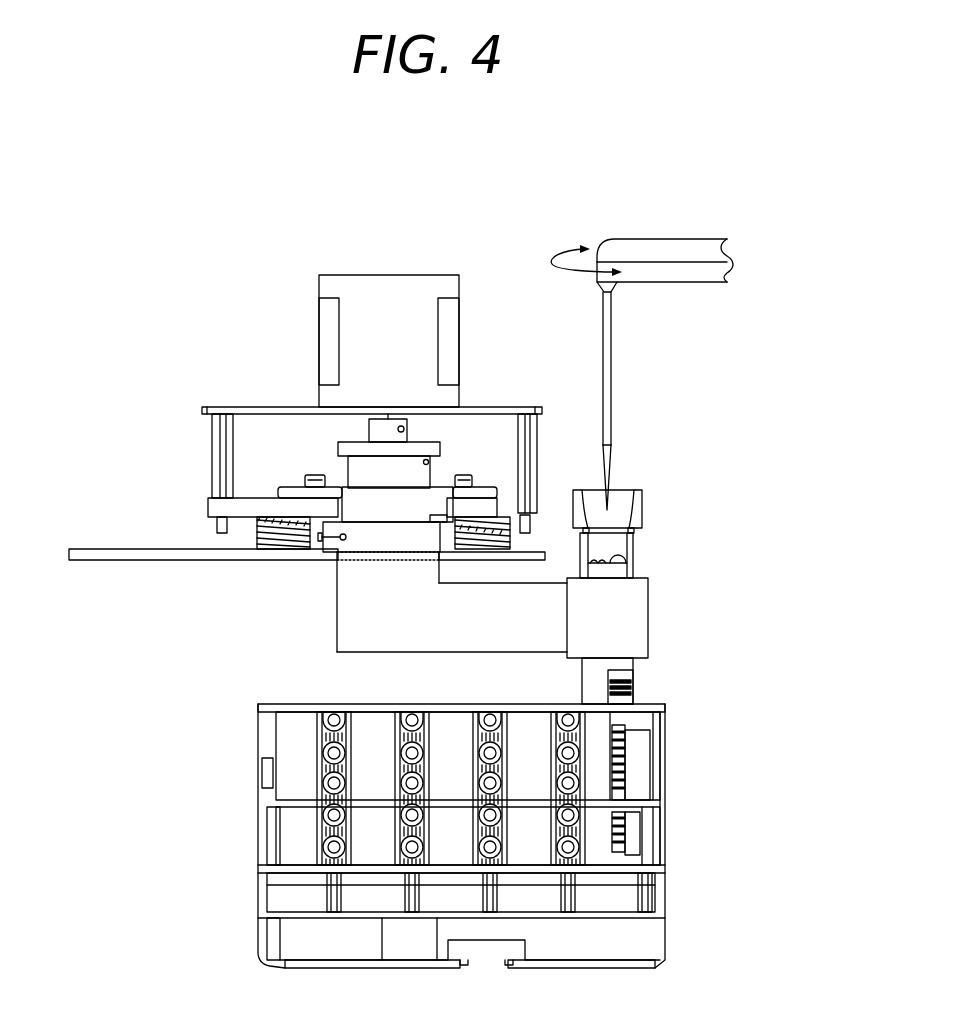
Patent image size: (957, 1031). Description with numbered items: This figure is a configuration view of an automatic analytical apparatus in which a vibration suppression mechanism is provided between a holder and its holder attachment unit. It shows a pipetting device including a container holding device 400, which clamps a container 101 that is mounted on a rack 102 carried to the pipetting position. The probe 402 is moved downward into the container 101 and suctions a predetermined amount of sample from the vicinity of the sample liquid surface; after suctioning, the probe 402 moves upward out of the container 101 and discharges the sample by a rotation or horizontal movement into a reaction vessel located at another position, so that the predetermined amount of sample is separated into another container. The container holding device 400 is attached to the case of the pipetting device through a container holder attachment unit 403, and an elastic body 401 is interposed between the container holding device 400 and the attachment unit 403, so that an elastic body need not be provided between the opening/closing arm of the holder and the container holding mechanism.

The container holding device 400 is at (276, 323).
The elastic body 401 is at (258, 530).
The probe 402 is at (720, 249).
The container holder attachment unit 403 is at (126, 549).
The container 101 is at (633, 558).
The rack 102 is at (665, 948).